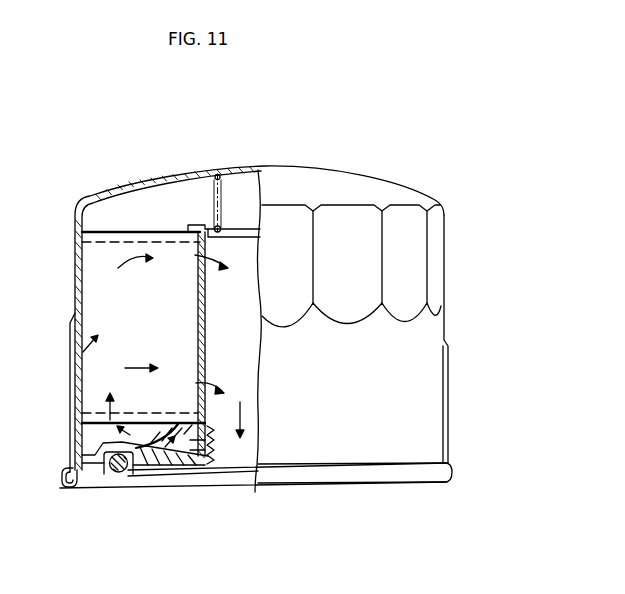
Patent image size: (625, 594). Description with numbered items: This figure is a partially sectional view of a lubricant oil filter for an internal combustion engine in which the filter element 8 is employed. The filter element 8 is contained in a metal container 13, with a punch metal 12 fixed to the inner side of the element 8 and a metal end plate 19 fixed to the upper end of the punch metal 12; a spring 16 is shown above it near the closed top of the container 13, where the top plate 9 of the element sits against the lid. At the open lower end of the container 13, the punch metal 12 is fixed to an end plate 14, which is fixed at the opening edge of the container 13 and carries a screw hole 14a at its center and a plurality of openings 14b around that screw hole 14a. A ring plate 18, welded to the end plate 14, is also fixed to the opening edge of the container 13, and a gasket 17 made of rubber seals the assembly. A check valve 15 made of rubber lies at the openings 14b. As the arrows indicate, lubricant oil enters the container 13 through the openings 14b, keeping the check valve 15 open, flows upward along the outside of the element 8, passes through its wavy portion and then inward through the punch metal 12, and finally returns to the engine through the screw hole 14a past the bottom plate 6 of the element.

The bottom plate of filter element 6 is at (102, 419).
The filter element 8 is at (95, 299).
The top plate of filter element 9 is at (98, 233).
The punch metal 12 is at (207, 371).
The metal container 13 is at (123, 183).
The end plate 14 is at (143, 455).
The screw hole 14a is at (236, 453).
The openings 14b is at (175, 447).
The check valve 15 is at (190, 461).
The spring 16 is at (216, 175).
The gasket 17 is at (118, 472).
The ring plate 18 is at (80, 481).
The metal end plate 19 is at (262, 228).